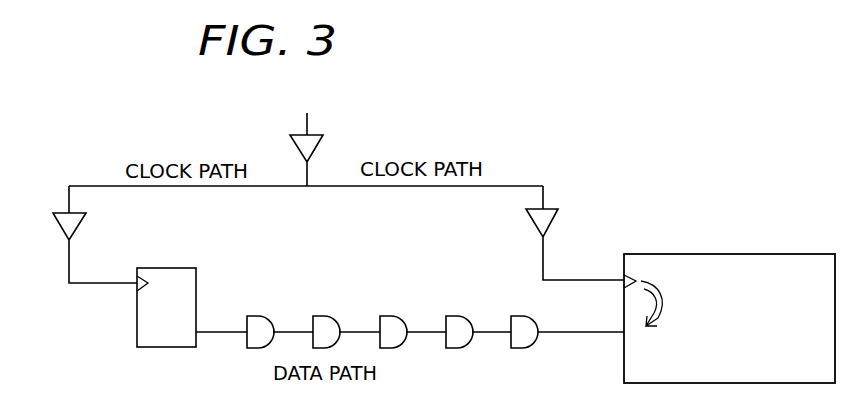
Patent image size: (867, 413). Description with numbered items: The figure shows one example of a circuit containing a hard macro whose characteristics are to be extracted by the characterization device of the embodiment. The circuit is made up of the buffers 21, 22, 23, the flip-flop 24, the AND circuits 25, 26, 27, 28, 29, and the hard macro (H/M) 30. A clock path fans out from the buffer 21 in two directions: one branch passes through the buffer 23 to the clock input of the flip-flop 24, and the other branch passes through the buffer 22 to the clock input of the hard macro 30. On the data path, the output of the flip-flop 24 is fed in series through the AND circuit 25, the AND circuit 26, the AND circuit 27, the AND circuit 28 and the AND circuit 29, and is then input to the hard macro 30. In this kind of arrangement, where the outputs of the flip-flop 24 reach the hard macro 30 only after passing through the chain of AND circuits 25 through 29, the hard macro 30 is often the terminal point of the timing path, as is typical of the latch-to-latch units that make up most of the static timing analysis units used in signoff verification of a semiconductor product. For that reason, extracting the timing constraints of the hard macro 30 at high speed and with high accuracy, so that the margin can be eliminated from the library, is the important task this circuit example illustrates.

The buffer 21 is at (318, 135).
The buffer 22 is at (556, 222).
The buffer 23 is at (86, 222).
The flip-flop 24 is at (137, 319).
The AND circuit 25 is at (254, 316).
The AND circuit 26 is at (320, 316).
The AND circuit 27 is at (387, 316).
The AND circuit 28 is at (453, 316).
The AND circuit 29 is at (518, 316).
The hard macro 30 is at (773, 254).